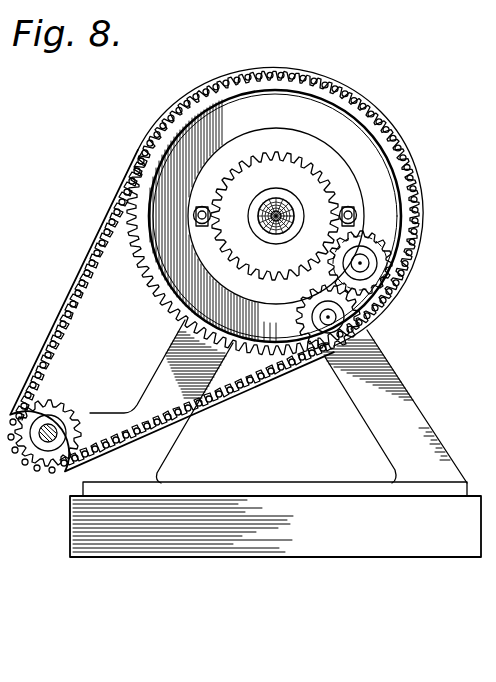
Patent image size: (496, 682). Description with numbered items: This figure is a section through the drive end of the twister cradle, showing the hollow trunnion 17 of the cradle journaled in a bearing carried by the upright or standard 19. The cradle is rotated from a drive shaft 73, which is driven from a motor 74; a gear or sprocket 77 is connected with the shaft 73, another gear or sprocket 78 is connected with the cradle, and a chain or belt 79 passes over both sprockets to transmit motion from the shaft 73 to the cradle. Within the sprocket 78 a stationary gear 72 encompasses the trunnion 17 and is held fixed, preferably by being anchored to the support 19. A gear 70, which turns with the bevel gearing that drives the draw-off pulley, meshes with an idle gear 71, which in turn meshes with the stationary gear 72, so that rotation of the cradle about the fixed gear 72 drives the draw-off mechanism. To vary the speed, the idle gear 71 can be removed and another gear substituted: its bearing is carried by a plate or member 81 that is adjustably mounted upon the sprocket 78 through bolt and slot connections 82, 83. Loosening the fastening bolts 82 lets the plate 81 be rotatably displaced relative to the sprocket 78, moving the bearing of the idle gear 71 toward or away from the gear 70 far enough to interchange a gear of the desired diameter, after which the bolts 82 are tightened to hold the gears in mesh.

The hollow trunnion 17 is at (279, 201).
The upright or standard 19 is at (390, 387).
The gear 70 is at (325, 347).
The idle gear 71 is at (386, 269).
The stationary gear 72 is at (310, 170).
The drive shaft 73 is at (57, 427).
The motor 74 is at (0, 352).
The gear or sprocket 77 is at (47, 409).
The gear or sprocket 78 is at (258, 108).
The chain or belt 79 is at (87, 264).
The plate or member 81 is at (280, 137).
The fastening bolt 82 is at (206, 232).
The slot 83 is at (203, 206).